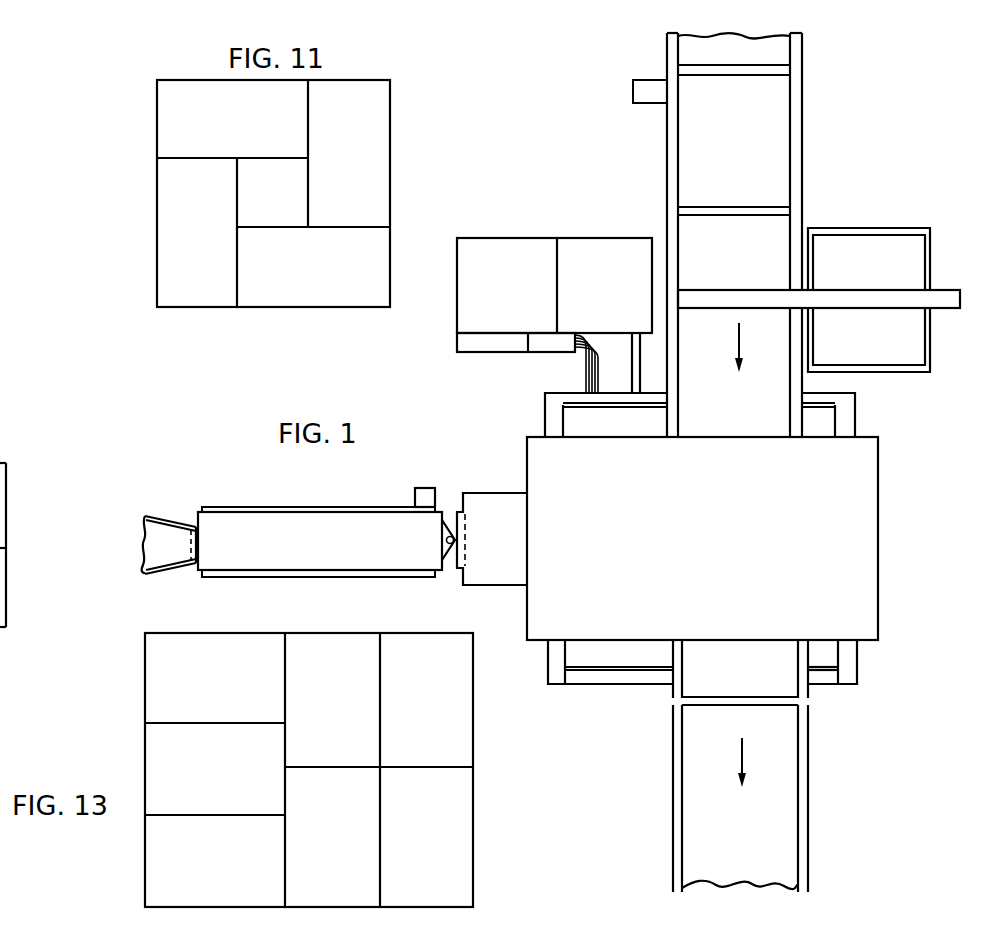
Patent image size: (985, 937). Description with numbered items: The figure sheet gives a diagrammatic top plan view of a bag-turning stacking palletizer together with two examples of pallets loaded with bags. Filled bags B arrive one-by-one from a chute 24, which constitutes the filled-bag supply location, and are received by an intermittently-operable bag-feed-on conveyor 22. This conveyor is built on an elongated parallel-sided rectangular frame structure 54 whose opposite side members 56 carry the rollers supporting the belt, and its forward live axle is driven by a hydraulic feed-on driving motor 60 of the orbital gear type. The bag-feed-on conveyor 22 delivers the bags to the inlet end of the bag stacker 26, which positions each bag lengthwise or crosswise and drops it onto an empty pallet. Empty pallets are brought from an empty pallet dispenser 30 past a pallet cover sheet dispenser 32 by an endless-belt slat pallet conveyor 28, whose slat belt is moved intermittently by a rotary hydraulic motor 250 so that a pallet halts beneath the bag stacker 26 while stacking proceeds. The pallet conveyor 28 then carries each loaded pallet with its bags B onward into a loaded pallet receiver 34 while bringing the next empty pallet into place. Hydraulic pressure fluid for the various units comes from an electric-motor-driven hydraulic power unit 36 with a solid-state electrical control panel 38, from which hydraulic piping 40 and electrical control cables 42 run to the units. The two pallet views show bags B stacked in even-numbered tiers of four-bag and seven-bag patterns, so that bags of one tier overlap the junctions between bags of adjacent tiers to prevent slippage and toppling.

In FIG. 1, the bag-feed-on conveyor 22 is at (336, 505).
In FIG. 1, the chute 24 is at (161, 511).
In FIG. 1, the bag stacker 26 is at (525, 469).
In FIG. 1, the pallet conveyor 28 is at (807, 223).
In FIG. 1, the empty pallet dispenser 30 is at (808, 116).
In FIG. 1, the pallet cover sheet dispenser 32 is at (931, 230).
In FIG. 1, the loaded pallet receiver 34 is at (672, 755).
In FIG. 1, the hydraulic power unit 36 is at (557, 235).
In FIG. 1, the electrical control panel 38 is at (455, 348).
In FIG. 1, the hydraulic piping 40 is at (645, 374).
In FIG. 1, the electrical control cables 42 is at (578, 372).
In FIG. 1, the frame structure 54 is at (214, 509).
In FIG. 1, the side members 56 is at (264, 509).
In FIG. 1, the hydraulic feed-on driving motor 60 is at (416, 490).
In FIG. 1, the rotary hydraulic motor 250 is at (660, 100).
In FIG. 11, the filled bags B is at (242, 131).
In FIG. 13, the filled bags B is at (222, 694).